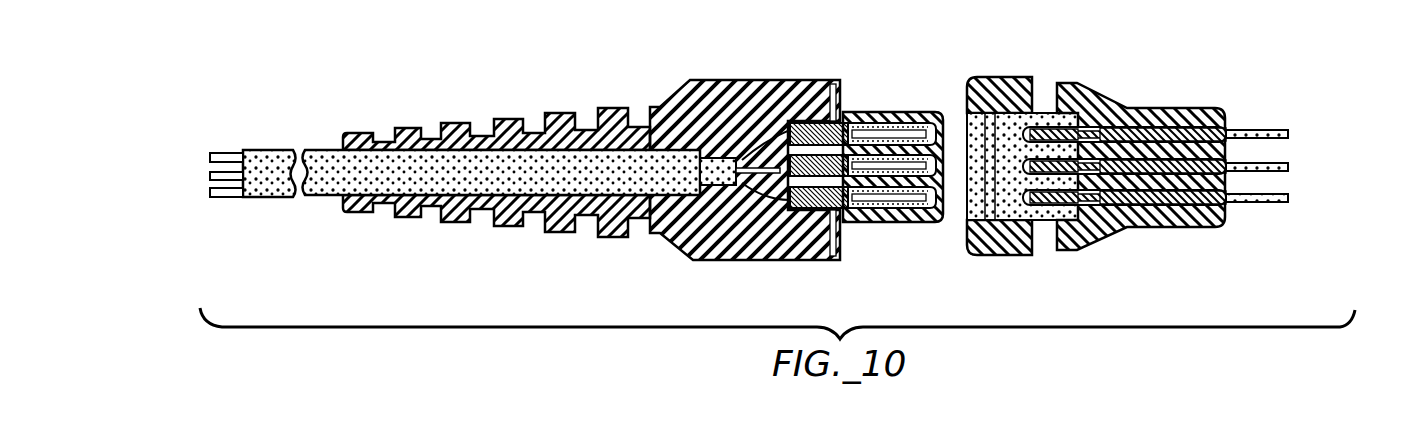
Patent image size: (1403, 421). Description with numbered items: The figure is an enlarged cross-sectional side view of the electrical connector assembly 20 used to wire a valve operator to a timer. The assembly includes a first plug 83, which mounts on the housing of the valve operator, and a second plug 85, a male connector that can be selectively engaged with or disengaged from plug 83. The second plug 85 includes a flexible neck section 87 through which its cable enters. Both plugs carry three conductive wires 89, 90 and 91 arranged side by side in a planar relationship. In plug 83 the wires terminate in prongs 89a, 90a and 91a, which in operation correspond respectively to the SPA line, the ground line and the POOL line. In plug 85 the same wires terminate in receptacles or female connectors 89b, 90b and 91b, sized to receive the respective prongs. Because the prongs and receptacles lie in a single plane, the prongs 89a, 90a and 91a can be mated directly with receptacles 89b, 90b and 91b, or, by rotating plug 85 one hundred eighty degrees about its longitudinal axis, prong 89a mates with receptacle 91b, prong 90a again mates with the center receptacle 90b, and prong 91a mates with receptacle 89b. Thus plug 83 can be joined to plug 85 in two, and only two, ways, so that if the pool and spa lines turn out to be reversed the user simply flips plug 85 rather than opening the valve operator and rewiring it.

The electrical connector assembly 20 is at (1195, 38).
The first plug 83 is at (988, 78).
The second plug 85 is at (743, 80).
The flexible neck section 87 is at (455, 125).
The conductive wire 89 is at (219, 152).
The conductive wire 90 is at (212, 178).
The conductive wire 91 is at (224, 183).
The prong 89a is at (1050, 113).
The prong 90a is at (1045, 175).
The prong 91a is at (1052, 223).
The receptacle 89b is at (946, 130).
The receptacle 90b is at (944, 170).
The receptacle 91b is at (893, 210).